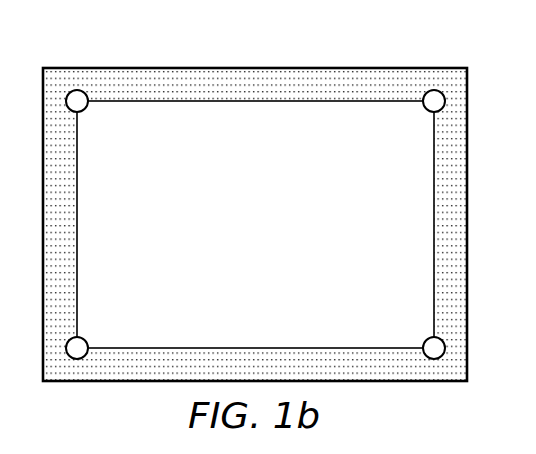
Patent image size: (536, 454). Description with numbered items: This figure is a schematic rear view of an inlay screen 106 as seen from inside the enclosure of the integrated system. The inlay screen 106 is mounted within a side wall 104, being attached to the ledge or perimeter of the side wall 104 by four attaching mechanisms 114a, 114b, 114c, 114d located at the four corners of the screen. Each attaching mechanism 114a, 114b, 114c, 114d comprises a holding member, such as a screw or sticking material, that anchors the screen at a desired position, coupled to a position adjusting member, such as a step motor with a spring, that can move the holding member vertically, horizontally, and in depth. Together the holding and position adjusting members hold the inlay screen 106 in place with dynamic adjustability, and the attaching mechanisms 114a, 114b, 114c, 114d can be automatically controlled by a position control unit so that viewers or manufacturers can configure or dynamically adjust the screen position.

The side wall 104 is at (256, 68).
The inlay screen 106 is at (278, 240).
The attaching mechanism 114a is at (426, 109).
The attaching mechanism 114b is at (85, 109).
The attaching mechanism 114c is at (85, 340).
The attaching mechanism 114d is at (426, 340).